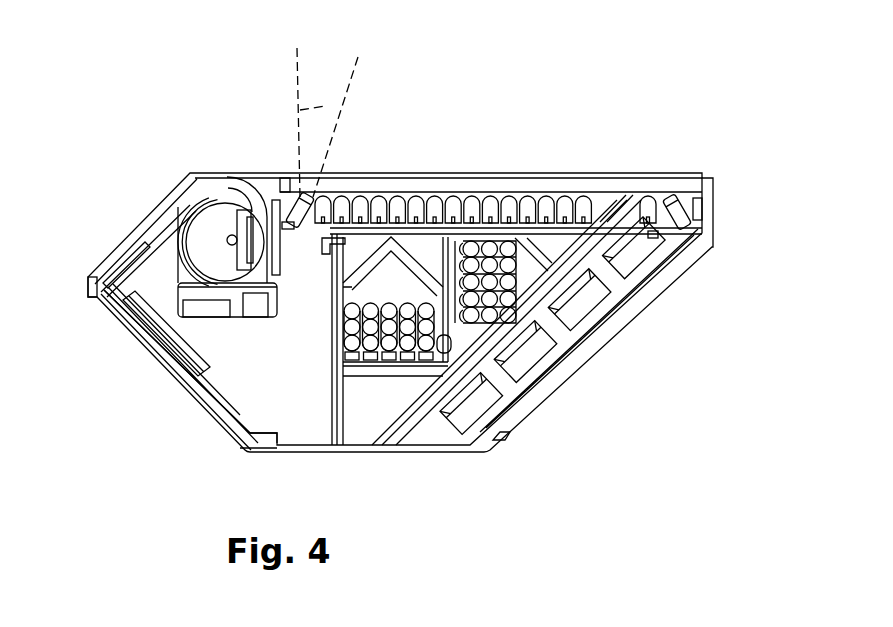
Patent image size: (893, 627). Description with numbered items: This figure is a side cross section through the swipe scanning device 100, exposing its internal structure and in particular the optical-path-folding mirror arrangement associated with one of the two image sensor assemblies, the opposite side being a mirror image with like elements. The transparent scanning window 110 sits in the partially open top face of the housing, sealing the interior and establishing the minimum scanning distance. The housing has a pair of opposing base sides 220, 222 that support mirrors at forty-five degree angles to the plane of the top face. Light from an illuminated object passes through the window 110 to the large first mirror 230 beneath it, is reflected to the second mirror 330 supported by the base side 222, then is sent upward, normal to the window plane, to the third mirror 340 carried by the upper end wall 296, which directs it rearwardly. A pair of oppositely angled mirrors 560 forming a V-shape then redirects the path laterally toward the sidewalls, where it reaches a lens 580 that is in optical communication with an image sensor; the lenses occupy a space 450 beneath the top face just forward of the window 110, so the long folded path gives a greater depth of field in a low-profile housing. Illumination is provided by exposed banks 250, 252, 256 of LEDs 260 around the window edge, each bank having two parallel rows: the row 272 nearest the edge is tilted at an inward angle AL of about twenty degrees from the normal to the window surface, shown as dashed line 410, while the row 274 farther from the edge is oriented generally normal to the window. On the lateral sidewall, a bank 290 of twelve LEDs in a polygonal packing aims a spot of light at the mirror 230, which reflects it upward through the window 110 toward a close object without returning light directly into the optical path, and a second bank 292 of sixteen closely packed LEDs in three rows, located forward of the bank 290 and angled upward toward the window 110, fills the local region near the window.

The scanning device 100 is at (511, 432).
The transparent scanning window 110 is at (691, 172).
The base side 220 is at (598, 338).
The base side 222 is at (195, 412).
The first 45-degree mirror 230 is at (540, 400).
The bank of LEDs 250 is at (508, 192).
The bank of LEDs 252 is at (290, 184).
The bank of LEDs 256 is at (660, 192).
The LEDs 260 is at (402, 197).
The LED row 272 is at (691, 190).
The LED row 274 is at (654, 235).
The bank of LEDs 290 is at (516, 268).
The second bank of LEDs 292 is at (387, 371).
The upper end wall 296 is at (127, 242).
The second 45-degree mirror 330 is at (180, 363).
The third 45-degree mirror 340 is at (95, 295).
The normal to window surface plane 410 is at (298, 70).
The space 450 is at (177, 258).
The oppositely angled mirrors 560 is at (255, 207).
The lens 580 is at (190, 208).
The inward angle AL is at (342, 115).